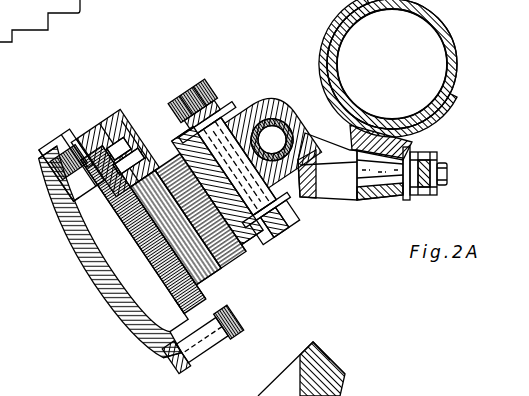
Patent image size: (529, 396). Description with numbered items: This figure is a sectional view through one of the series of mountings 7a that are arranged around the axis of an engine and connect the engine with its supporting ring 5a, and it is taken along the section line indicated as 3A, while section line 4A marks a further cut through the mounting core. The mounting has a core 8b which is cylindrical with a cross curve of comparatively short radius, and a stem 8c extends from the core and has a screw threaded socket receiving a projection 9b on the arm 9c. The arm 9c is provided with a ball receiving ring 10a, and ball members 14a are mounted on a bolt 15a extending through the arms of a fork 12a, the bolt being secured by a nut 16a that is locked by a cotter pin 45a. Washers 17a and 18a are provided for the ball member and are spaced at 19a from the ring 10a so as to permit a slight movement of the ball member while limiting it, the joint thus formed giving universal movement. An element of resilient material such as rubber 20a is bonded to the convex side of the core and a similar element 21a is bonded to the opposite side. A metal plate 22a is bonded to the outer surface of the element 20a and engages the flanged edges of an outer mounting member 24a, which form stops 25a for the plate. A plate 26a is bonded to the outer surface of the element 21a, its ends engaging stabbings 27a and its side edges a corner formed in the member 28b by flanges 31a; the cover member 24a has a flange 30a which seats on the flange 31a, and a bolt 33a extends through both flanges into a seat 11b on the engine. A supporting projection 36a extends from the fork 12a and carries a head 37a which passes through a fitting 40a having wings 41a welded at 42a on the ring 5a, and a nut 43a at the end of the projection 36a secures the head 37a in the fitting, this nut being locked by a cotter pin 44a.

The mountings 7a is at (119, 4).
The supporting ring 5a is at (450, 33).
The weld 42a is at (458, 95).
The wings 41a is at (447, 117).
The fitting 40a is at (410, 143).
The nut 43a is at (427, 195).
The cotter pin 44a is at (447, 171).
The supporting projection 36a is at (325, 163).
The head 37a is at (363, 213).
The spacing 19a is at (302, 170).
The fork 12a is at (250, 107).
The ball receiving ring 10a is at (262, 130).
The ball members 14a is at (280, 127).
The cotter pin 45a is at (185, 108).
The nut 16a is at (212, 102).
The washer 18a is at (190, 102).
The washer 17a is at (305, 203).
The bolt 15a is at (278, 235).
The projection 9b is at (207, 253).
The arm 9c is at (222, 228).
The core 8b is at (197, 293).
The stem 8c is at (162, 141).
The plate 26a is at (147, 235).
The member 28b is at (156, 254).
The outer mounting member 24a is at (78, 145).
The resilient element 21a is at (78, 201).
The resilient element 20a is at (122, 150).
The metal plate 22a is at (137, 168).
The stops 25a is at (127, 165).
The flange 30a is at (193, 343).
The flanges 31a is at (192, 353).
The bolt 33a is at (227, 320).
The stabbings 27a is at (323, 362).
The seat 11b is at (133, 345).
The section line 4A is at (283, 138).
The section line 3A is at (125, 128).